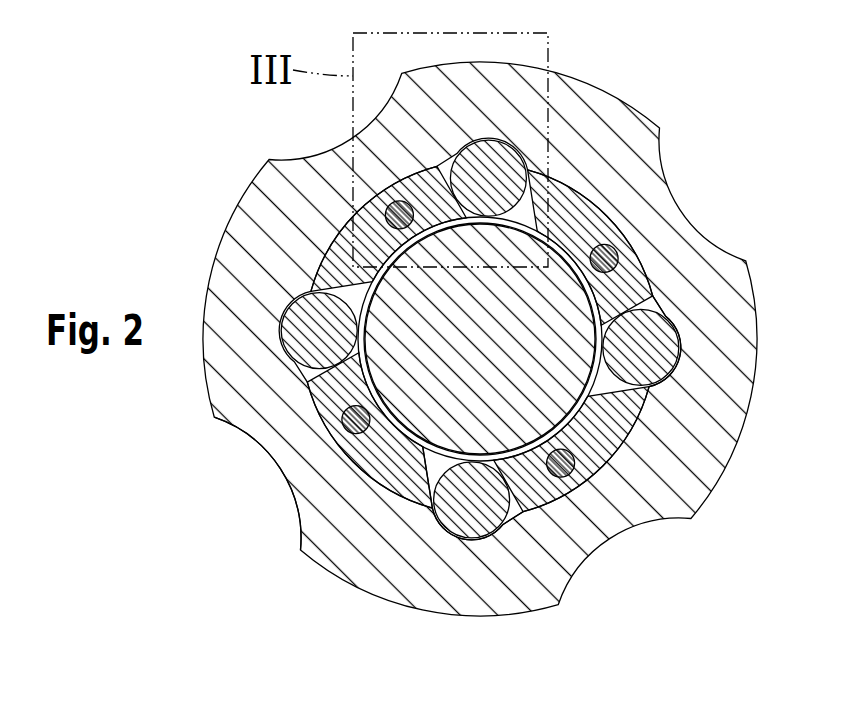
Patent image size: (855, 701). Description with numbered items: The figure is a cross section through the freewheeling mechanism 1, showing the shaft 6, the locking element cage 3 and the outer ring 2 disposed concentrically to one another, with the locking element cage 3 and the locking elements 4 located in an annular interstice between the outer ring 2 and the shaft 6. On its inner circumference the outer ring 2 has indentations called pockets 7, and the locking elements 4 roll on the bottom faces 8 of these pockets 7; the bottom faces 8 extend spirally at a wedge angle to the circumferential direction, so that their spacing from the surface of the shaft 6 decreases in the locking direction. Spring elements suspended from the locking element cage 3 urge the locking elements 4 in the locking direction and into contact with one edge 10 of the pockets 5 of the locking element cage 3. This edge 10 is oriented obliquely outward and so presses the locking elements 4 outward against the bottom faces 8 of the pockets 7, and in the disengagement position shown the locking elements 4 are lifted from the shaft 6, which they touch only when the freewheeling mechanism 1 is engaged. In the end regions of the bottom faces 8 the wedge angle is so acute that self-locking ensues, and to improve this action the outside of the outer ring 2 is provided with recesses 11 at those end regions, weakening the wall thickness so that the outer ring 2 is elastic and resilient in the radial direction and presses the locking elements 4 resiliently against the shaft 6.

The freewheeling mechanism 1 is at (217, 138).
The outer ring 2 is at (583, 118).
The locking element cage 3 is at (507, 400).
The locking elements 4 is at (468, 500).
The pockets of the locking element cage 5 is at (432, 483).
The shaft 6 is at (577, 458).
The pockets 7 is at (512, 497).
The bottom faces 8 is at (640, 266).
The edge 10 is at (488, 515).
The recesses 11 is at (283, 477).